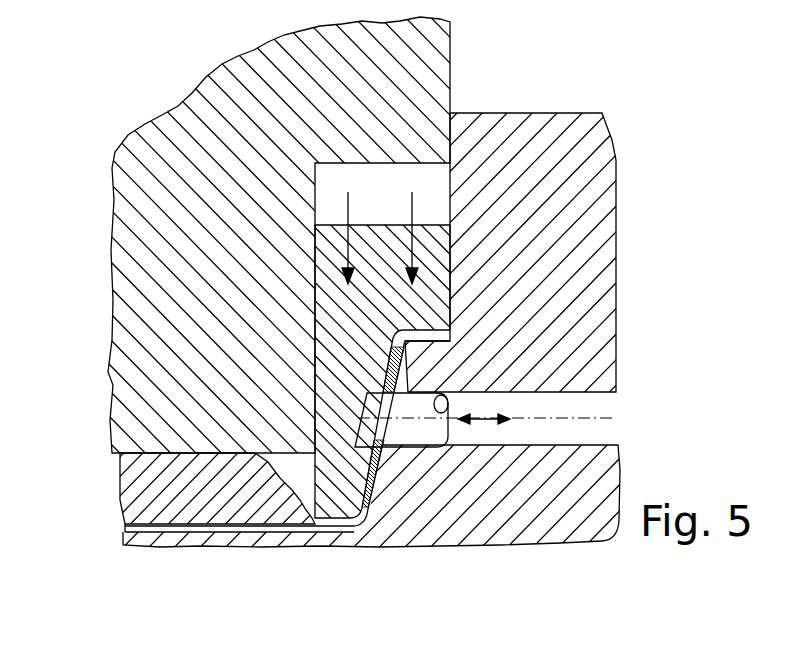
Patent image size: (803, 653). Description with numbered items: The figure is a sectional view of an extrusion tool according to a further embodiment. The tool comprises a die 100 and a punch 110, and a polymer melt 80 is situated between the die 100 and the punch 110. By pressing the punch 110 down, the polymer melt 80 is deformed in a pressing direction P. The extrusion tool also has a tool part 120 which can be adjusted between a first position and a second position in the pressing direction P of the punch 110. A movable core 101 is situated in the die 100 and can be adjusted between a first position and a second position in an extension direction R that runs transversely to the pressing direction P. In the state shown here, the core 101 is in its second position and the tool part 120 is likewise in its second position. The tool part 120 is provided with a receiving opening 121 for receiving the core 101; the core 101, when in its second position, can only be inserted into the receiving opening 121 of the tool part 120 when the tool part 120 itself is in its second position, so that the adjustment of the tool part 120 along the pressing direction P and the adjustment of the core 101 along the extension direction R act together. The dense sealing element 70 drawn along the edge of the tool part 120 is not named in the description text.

The punch 110 is at (112, 336).
The tool part 120 is at (423, 308).
The receiving opening 121 is at (388, 425).
The sealing lip 70 is at (400, 478).
The polymer melt 80 is at (120, 490).
The die 100 is at (560, 500).
The movable core 101 is at (412, 430).
The pressing direction P is at (412, 205).
The extension direction R is at (480, 425).